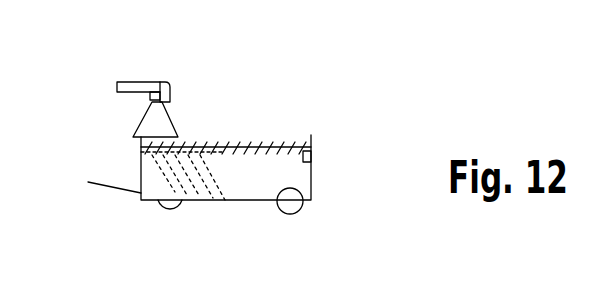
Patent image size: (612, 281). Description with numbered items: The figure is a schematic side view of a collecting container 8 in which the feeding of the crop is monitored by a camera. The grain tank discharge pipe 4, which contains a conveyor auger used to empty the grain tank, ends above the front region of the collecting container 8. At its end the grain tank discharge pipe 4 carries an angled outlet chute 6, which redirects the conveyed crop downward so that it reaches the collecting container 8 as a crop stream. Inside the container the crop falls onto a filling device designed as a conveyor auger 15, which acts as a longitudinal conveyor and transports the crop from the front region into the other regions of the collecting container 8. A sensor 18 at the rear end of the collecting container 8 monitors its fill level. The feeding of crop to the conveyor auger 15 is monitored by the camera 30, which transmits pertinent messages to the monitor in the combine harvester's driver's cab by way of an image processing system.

The grain tank discharge pipe 4 is at (135, 82).
The outlet chute 6 is at (170, 94).
The camera 30 is at (146, 114).
The conveyor auger 15 is at (250, 145).
The sensor 18 is at (312, 158).
The collecting container 8 is at (316, 187).